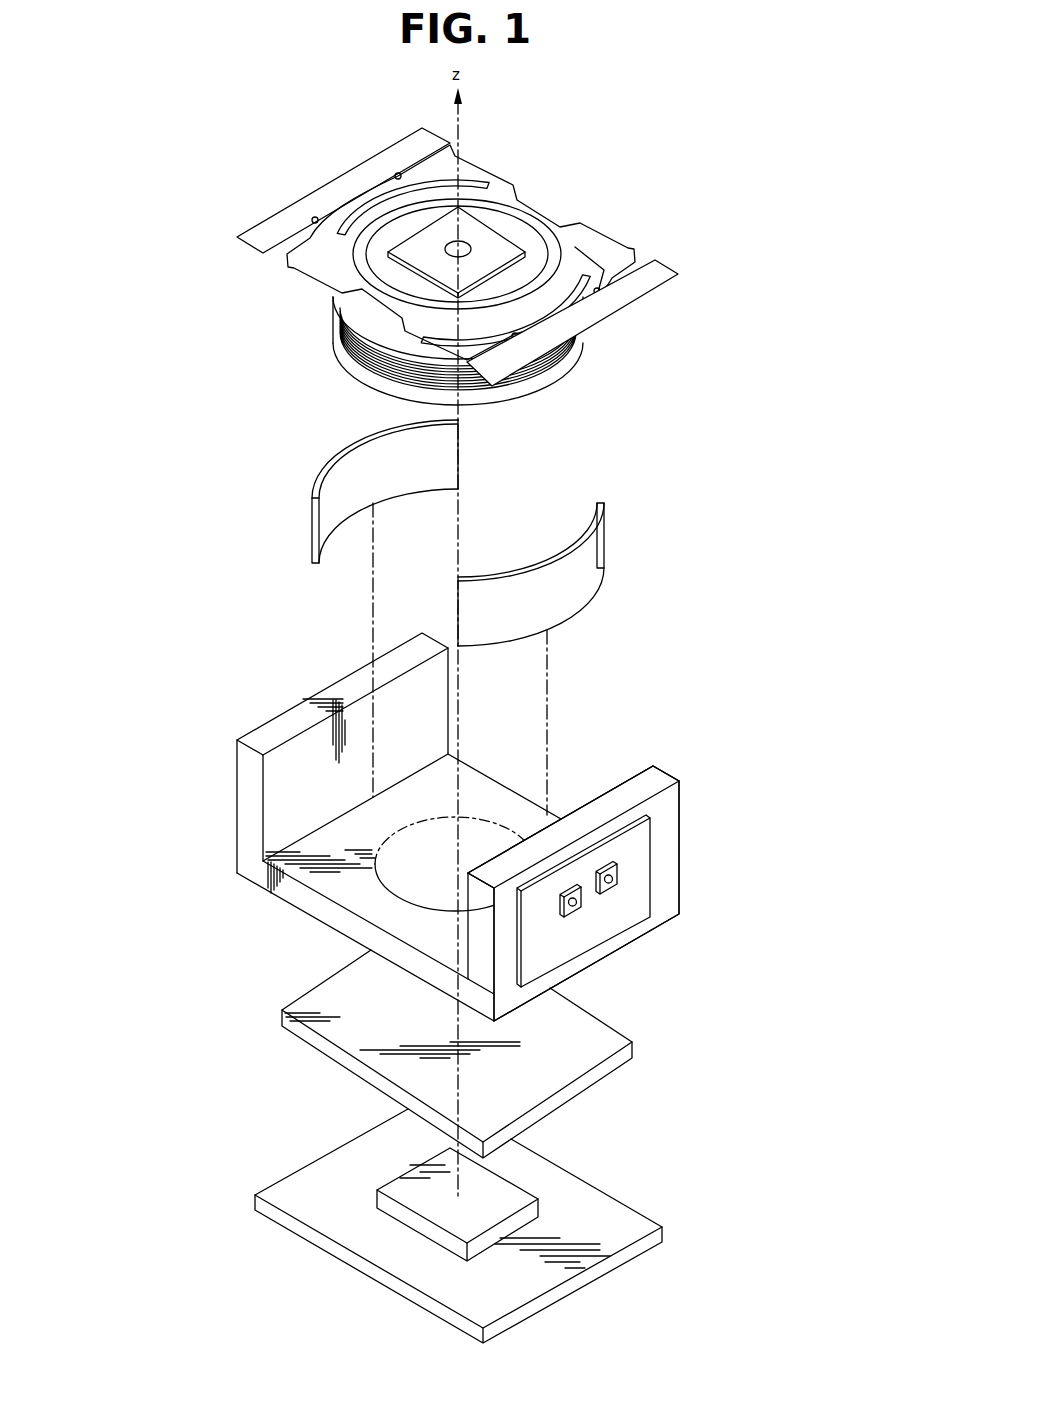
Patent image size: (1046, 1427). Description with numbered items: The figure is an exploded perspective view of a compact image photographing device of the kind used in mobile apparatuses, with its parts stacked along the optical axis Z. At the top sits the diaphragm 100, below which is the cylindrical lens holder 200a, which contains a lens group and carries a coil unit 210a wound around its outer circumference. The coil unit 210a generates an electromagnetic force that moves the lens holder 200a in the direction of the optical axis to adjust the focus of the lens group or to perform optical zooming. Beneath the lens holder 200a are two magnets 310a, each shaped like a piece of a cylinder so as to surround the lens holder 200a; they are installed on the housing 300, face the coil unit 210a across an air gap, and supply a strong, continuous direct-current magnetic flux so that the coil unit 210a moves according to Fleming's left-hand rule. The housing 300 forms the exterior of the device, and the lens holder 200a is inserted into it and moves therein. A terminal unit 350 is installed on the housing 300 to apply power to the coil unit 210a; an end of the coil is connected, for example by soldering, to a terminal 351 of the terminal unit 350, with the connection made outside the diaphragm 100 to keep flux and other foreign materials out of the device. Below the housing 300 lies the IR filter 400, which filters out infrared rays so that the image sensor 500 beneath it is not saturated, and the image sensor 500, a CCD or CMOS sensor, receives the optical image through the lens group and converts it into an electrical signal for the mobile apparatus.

The diaphragm 100 is at (648, 318).
The lens holder 200a is at (362, 330).
The coil unit 210a is at (340, 345).
The housing 300 is at (275, 893).
The magnet 310a is at (578, 587).
The terminal unit 350 is at (605, 924).
The terminal 351 is at (620, 880).
The IR filter 400 is at (365, 1030).
The image sensor 500 is at (438, 1207).